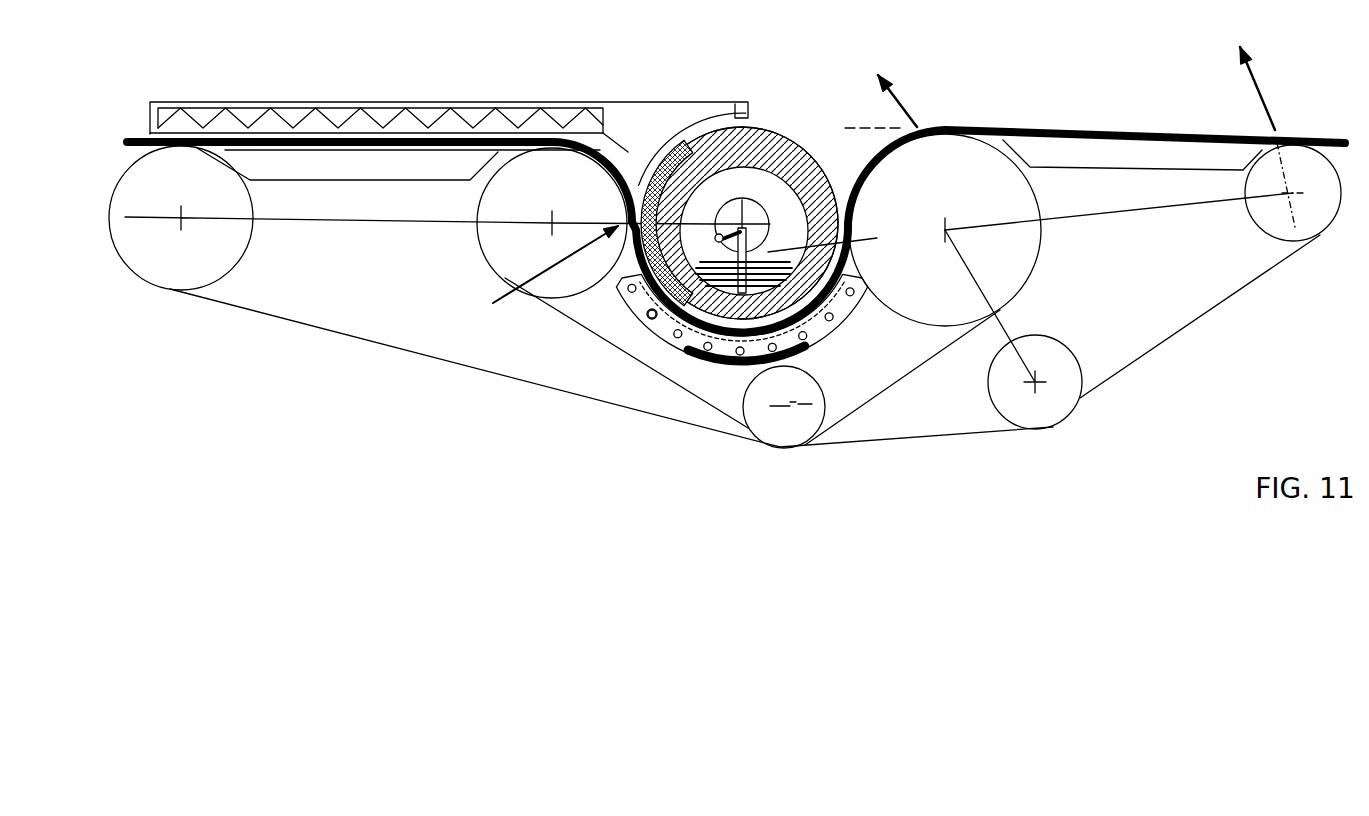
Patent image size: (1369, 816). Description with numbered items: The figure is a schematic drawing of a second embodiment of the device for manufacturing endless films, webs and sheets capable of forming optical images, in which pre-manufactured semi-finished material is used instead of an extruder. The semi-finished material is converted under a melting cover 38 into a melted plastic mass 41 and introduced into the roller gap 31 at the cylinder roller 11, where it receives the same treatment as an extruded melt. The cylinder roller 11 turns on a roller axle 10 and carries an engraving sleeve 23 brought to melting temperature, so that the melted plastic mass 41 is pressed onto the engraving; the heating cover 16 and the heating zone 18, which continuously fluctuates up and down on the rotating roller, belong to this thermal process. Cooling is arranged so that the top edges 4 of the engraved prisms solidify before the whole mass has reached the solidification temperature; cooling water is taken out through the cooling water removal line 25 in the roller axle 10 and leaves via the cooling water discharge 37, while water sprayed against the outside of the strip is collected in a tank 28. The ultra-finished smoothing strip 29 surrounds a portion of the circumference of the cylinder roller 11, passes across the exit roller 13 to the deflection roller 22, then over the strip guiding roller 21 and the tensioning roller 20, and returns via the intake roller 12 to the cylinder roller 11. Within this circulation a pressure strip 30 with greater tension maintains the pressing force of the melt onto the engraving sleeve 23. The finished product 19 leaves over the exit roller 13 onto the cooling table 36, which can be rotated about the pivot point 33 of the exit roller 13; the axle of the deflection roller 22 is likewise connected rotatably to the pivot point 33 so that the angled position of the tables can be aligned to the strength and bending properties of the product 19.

The top edges 4 is at (584, 418).
The roller axle 10 is at (748, 215).
The cylinder roller 11 is at (738, 118).
The intake roller 12 is at (493, 250).
The exit roller 13 is at (1008, 277).
The heating cover 16 is at (630, 125).
The heating zone 18 is at (679, 160).
The product 19 is at (1040, 127).
The tensioning roller 20 is at (790, 433).
The strip guiding roller 21 is at (1053, 407).
The deflection roller 22 is at (1290, 144).
The engraving sleeve 23 is at (796, 136).
The cooling water removal line 25 is at (655, 308).
The tank 28 is at (628, 300).
The smoothing strip 29 is at (1178, 350).
The pressure strip 30 is at (923, 363).
The roller gap 31 is at (532, 285).
The pivot point 33 is at (955, 234).
The cooling table 36 is at (1102, 150).
The cooling water discharge 37 is at (730, 373).
The melting cover 38 is at (362, 101).
The melted plastic mass 41 is at (418, 101).